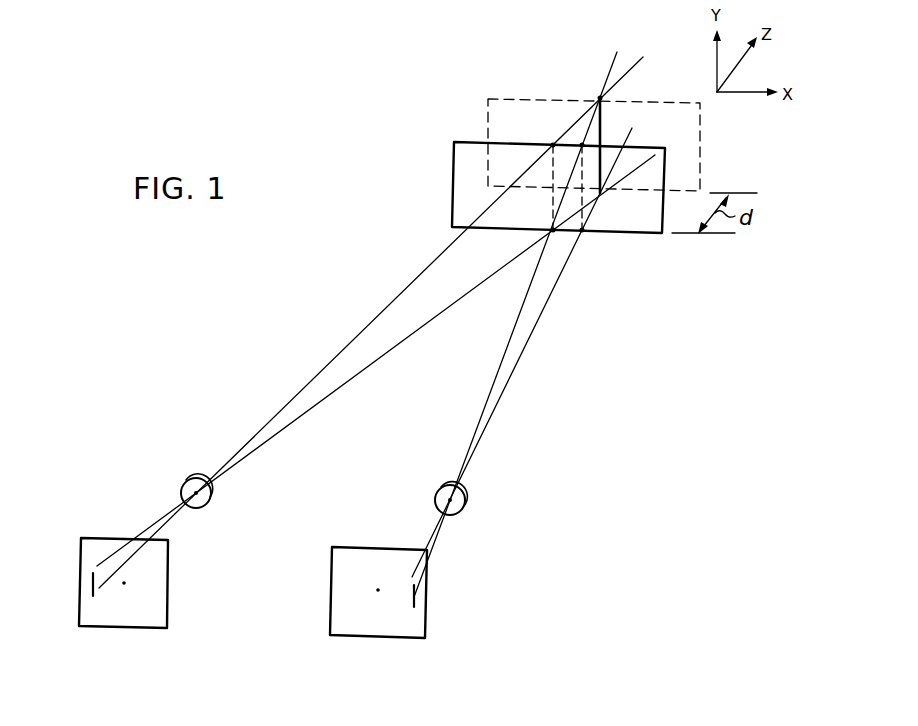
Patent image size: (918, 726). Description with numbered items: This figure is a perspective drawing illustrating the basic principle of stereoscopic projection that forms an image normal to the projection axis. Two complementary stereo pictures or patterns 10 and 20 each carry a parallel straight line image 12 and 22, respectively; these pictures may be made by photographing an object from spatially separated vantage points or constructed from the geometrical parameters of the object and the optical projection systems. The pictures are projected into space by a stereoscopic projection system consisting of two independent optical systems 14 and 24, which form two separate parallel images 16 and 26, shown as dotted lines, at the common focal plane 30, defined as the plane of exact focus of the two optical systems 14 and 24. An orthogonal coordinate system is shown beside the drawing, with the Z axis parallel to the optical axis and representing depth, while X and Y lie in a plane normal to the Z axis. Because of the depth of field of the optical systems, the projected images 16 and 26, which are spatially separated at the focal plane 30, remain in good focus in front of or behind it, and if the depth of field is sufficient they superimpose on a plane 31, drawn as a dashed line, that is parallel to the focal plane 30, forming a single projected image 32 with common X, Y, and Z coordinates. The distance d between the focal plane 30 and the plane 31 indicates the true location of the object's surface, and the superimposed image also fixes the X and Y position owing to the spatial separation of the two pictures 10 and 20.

The stereo picture or pattern 10 is at (331, 600).
The parallel straight line image 12 is at (415, 593).
The optical system 14 is at (466, 498).
The projected parallel image 16 is at (583, 210).
The stereo picture or pattern 20 is at (168, 594).
The parallel straight line image 22 is at (92, 589).
The optical system 24 is at (180, 488).
The projected parallel image 26 is at (553, 204).
The common focal plane 30 is at (452, 200).
The plane 31 is at (488, 109).
The single projected image 32 is at (603, 118).